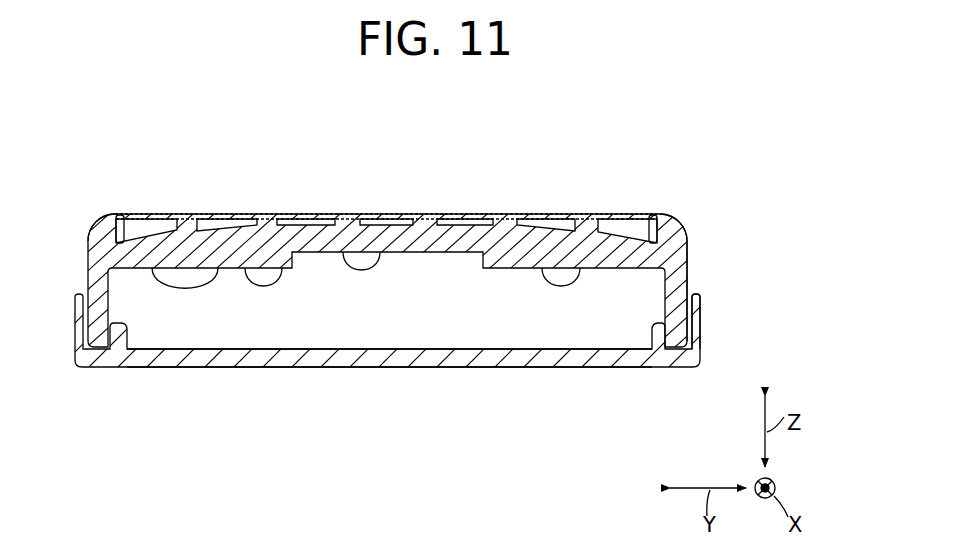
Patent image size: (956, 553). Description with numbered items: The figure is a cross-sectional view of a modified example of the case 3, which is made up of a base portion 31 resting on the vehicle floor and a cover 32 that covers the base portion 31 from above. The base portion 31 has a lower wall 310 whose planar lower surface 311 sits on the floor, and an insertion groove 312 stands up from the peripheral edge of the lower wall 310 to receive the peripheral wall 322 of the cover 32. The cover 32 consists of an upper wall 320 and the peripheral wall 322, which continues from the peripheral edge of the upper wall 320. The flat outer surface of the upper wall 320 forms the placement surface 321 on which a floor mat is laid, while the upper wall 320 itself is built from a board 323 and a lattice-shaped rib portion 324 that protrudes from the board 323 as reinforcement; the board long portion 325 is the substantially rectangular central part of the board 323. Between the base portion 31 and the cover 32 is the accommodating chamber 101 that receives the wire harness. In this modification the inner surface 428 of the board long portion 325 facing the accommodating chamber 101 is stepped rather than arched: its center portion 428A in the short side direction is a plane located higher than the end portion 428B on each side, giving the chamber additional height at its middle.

The case 3 is at (596, 126).
The cover 32 is at (690, 263).
The base portion 31 is at (703, 348).
The placement surface 321 is at (619, 218).
The peripheral wall 322 is at (683, 281).
The board 323 is at (87, 234).
The lattice-shaped rib portion 324 is at (646, 218).
The board long portion 325 is at (99, 232).
The upper wall 320 is at (566, 519).
The insertion groove 312 is at (690, 316).
The lower wall 310 is at (538, 360).
The lower surface 311 is at (634, 367).
The accommodating chamber 101 is at (401, 322).
The inner surface 428 is at (218, 268).
The center portion 428A is at (380, 252).
The end portion 428B is at (283, 268).